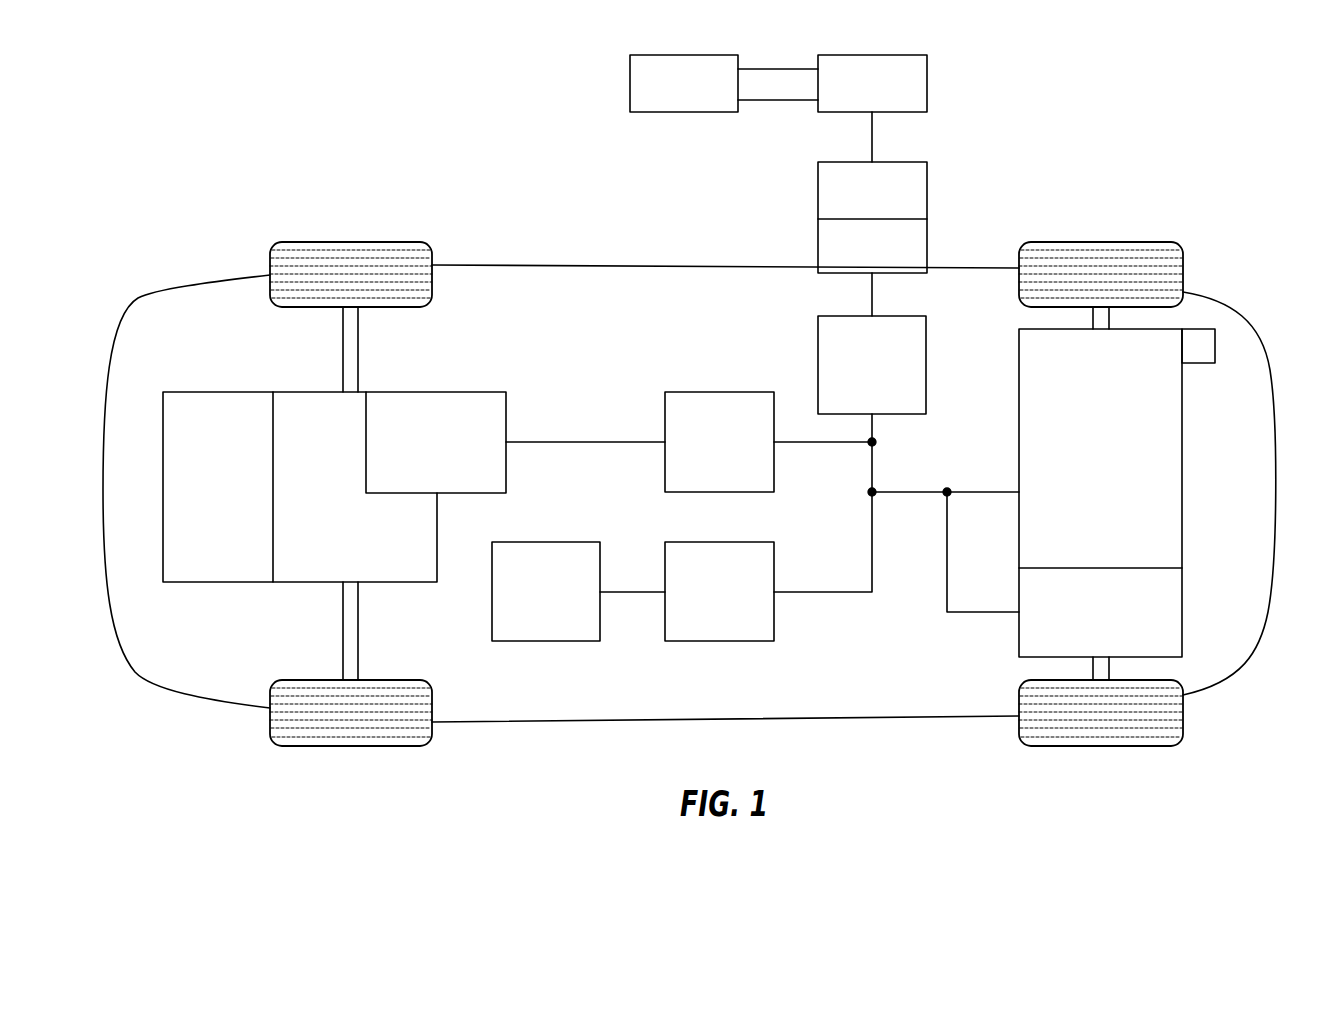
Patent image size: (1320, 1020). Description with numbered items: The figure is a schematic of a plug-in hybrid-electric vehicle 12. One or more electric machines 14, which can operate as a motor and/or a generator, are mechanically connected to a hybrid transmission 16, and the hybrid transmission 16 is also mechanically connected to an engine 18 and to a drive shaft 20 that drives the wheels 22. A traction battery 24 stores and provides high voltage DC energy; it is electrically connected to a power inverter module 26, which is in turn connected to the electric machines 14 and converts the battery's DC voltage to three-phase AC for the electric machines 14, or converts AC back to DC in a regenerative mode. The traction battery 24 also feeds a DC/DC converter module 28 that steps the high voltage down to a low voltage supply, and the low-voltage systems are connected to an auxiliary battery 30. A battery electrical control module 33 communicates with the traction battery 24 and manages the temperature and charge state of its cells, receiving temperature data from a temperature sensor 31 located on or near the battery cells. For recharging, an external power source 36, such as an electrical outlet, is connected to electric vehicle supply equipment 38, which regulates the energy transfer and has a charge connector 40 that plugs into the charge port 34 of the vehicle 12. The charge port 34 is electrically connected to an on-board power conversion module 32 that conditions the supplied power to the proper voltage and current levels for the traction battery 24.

The vehicle 12 is at (660, 264).
The electric machines 14 is at (440, 392).
The hybrid transmission 16 is at (302, 392).
The engine 18 is at (211, 392).
The drive shaft 20 is at (358, 632).
The wheels 22 is at (371, 242).
The traction battery 24 is at (1182, 501).
The power inverter module 26 is at (708, 392).
The DC/DC converter module 28 is at (723, 641).
The auxiliary battery 30 is at (545, 542).
The temperature sensor 31 is at (1215, 342).
The power conversion module 32 is at (926, 356).
The battery electrical control module 33 is at (1182, 606).
The charge port 34 is at (927, 238).
The external power source 36 is at (630, 80).
The electric vehicle supply equipment 38 is at (927, 82).
The charge connector 40 is at (927, 188).